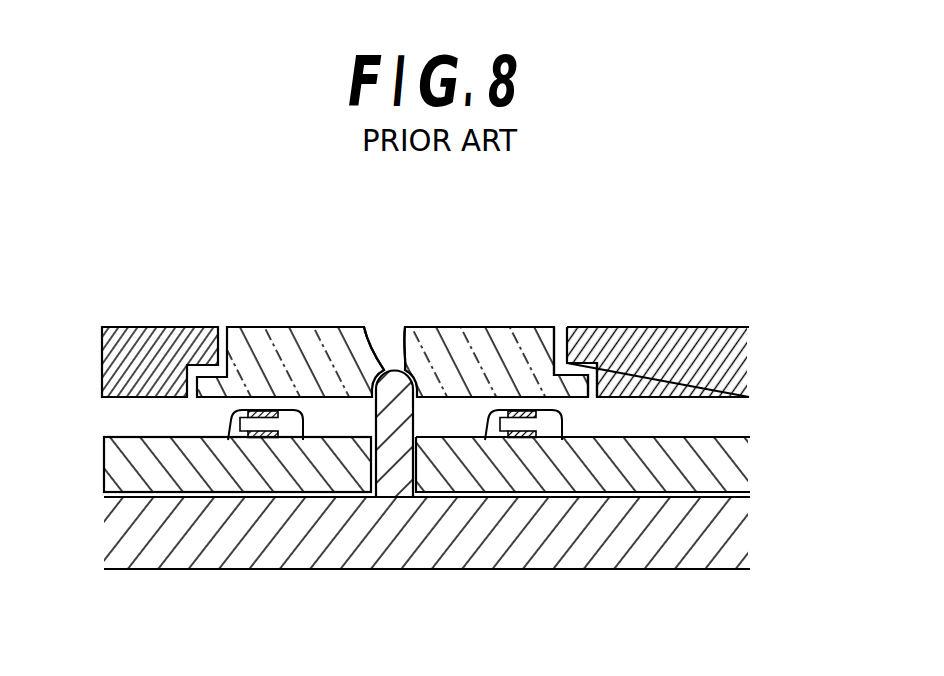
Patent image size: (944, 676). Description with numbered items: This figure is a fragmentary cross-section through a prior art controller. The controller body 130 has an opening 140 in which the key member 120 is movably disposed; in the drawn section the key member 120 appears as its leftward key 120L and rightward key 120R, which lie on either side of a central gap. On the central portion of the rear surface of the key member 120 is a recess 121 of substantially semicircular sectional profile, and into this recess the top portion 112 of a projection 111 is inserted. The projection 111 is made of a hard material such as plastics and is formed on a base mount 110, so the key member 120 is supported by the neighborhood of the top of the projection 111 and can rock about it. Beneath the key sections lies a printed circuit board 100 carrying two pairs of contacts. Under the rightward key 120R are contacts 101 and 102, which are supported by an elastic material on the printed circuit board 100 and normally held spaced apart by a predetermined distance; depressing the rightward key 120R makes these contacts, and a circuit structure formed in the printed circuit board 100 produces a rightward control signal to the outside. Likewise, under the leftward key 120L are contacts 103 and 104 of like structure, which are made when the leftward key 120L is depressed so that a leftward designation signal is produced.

The controller body 130 is at (153, 325).
The key member 120 is at (392, 313).
The leftward key section 120L is at (258, 326).
The rightward key section 120R is at (463, 339).
The top portion of the projection 112 is at (360, 326).
The recess 121 is at (403, 326).
The opening 140 is at (560, 330).
The contact 103 is at (230, 421).
The contact 104 is at (278, 433).
The contact 101 is at (488, 420).
The contact 102 is at (536, 433).
The printed circuit board 100 is at (742, 451).
The base mount 110 is at (742, 522).
The projection 111 is at (397, 470).